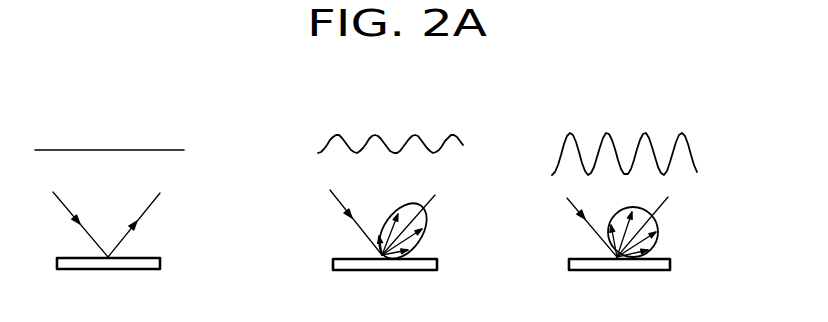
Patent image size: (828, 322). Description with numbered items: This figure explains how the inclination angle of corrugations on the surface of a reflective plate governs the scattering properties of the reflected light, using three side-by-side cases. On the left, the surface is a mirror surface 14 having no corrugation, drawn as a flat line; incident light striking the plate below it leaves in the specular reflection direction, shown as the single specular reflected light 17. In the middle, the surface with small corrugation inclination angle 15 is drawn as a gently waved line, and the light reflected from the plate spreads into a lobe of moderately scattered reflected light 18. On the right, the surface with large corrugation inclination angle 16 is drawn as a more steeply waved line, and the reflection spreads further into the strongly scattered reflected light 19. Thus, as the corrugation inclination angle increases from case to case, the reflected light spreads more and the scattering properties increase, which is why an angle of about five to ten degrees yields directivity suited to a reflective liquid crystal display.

The mirror surface 14 is at (163, 150).
The surface with small corrugation inclination angle 15 is at (460, 140).
The surface with large corrugation inclination angle 16 is at (695, 160).
The specular reflected light 17 is at (150, 208).
The moderately scattered reflected light 18 is at (427, 217).
The strongly scattered reflected light 19 is at (658, 227).